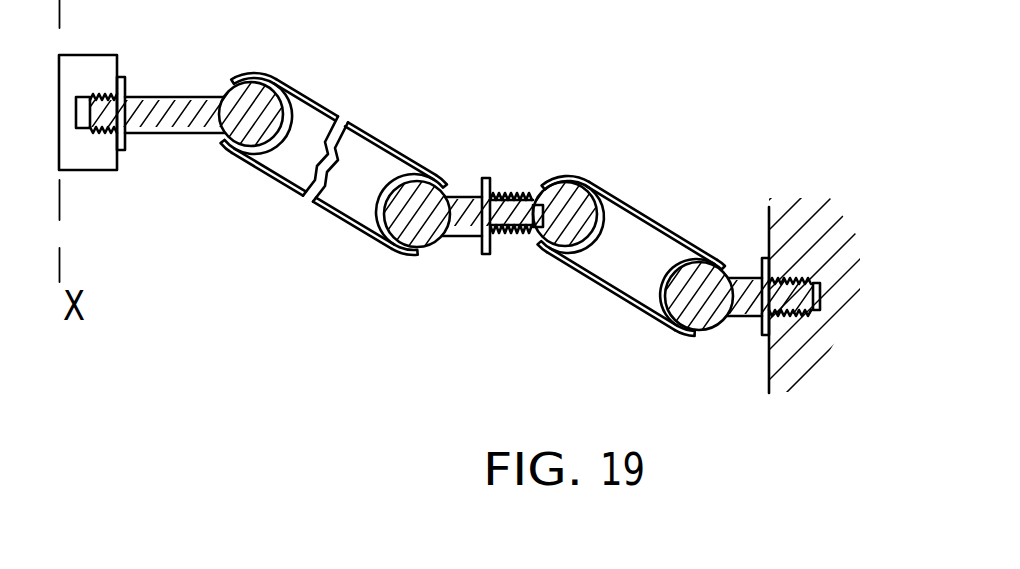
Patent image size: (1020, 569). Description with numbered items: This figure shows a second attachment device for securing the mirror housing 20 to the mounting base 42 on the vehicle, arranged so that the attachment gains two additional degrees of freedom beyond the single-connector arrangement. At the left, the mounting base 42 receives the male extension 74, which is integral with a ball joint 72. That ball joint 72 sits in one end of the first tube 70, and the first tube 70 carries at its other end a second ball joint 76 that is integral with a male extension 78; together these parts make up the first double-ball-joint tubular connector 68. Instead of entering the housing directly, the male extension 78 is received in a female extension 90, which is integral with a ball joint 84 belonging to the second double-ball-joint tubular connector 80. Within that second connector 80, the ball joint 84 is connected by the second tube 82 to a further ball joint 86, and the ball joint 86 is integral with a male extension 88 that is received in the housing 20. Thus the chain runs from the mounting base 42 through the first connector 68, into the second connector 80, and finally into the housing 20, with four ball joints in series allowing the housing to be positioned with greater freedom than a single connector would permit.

The housing 20 is at (813, 228).
The mounting base 42 is at (87, 150).
The first double-ball-joint tubular connector 68 is at (323, 133).
The first tube 70 is at (273, 180).
The ball joint 72 is at (257, 98).
The male extension 74 is at (183, 113).
The ball joint 76 is at (415, 203).
The male extension 78 is at (512, 207).
The second double-ball-joint tubular connector 80 is at (622, 229).
The second tube 82 is at (600, 287).
The ball joint 84 is at (568, 212).
The ball joint 86 is at (720, 323).
The male extension 88 is at (760, 278).
The female extension 90 is at (517, 237).